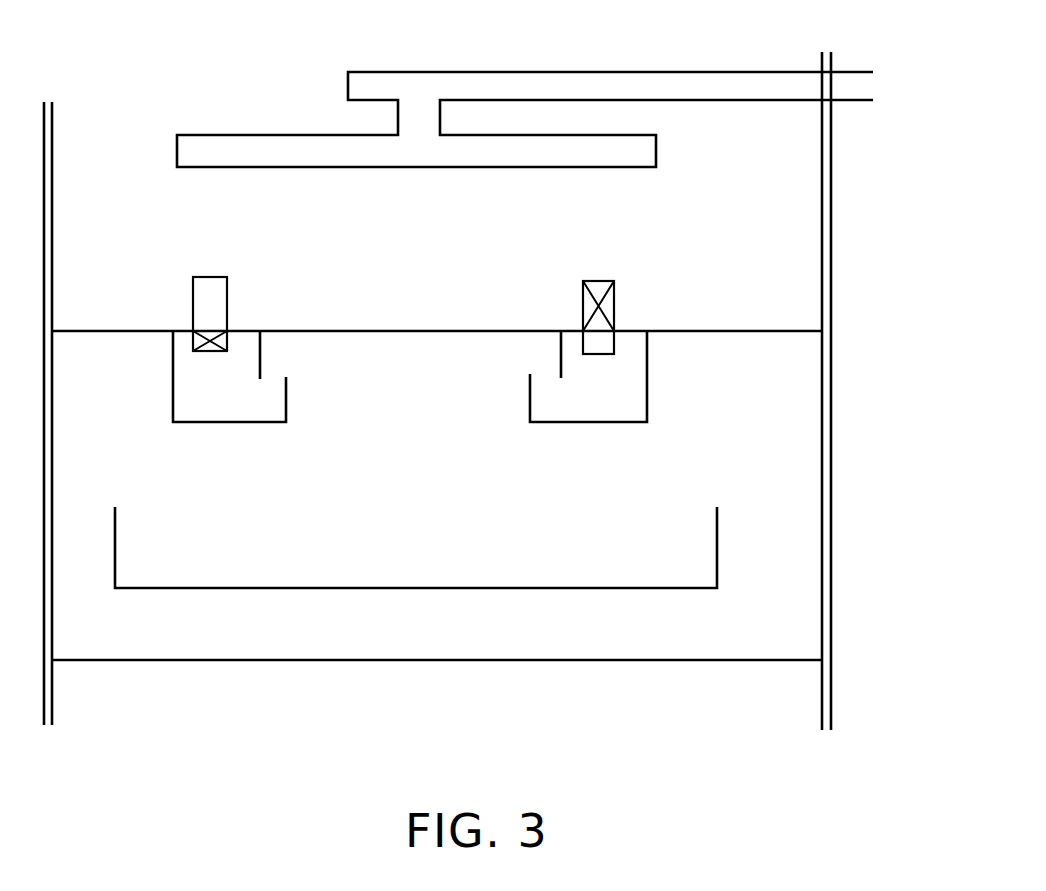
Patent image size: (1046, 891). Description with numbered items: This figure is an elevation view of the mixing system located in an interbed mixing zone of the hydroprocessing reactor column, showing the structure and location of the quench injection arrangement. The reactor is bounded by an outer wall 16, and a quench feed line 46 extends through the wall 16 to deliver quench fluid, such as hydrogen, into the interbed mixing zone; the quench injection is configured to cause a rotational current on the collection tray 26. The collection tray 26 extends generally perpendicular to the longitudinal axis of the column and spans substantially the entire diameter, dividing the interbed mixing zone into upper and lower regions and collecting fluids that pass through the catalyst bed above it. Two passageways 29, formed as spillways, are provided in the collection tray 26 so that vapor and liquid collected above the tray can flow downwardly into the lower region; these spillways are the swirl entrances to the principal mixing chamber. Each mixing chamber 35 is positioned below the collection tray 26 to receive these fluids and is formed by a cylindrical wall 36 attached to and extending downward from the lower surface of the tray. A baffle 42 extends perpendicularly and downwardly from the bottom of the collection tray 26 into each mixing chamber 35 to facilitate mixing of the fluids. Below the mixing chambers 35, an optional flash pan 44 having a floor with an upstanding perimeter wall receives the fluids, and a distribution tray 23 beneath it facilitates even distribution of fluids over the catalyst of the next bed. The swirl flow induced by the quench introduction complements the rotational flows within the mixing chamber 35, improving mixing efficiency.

The outer wall 16 is at (832, 390).
The distribution tray 23 is at (679, 661).
The collection tray 26 is at (93, 330).
The passageway 29 is at (616, 293).
The mixing chamber 35 is at (243, 408).
The cylindrical wall 36 is at (172, 377).
The baffle 42 is at (262, 353).
The flash pan 44 is at (678, 588).
The quench feed line 46 is at (848, 71).